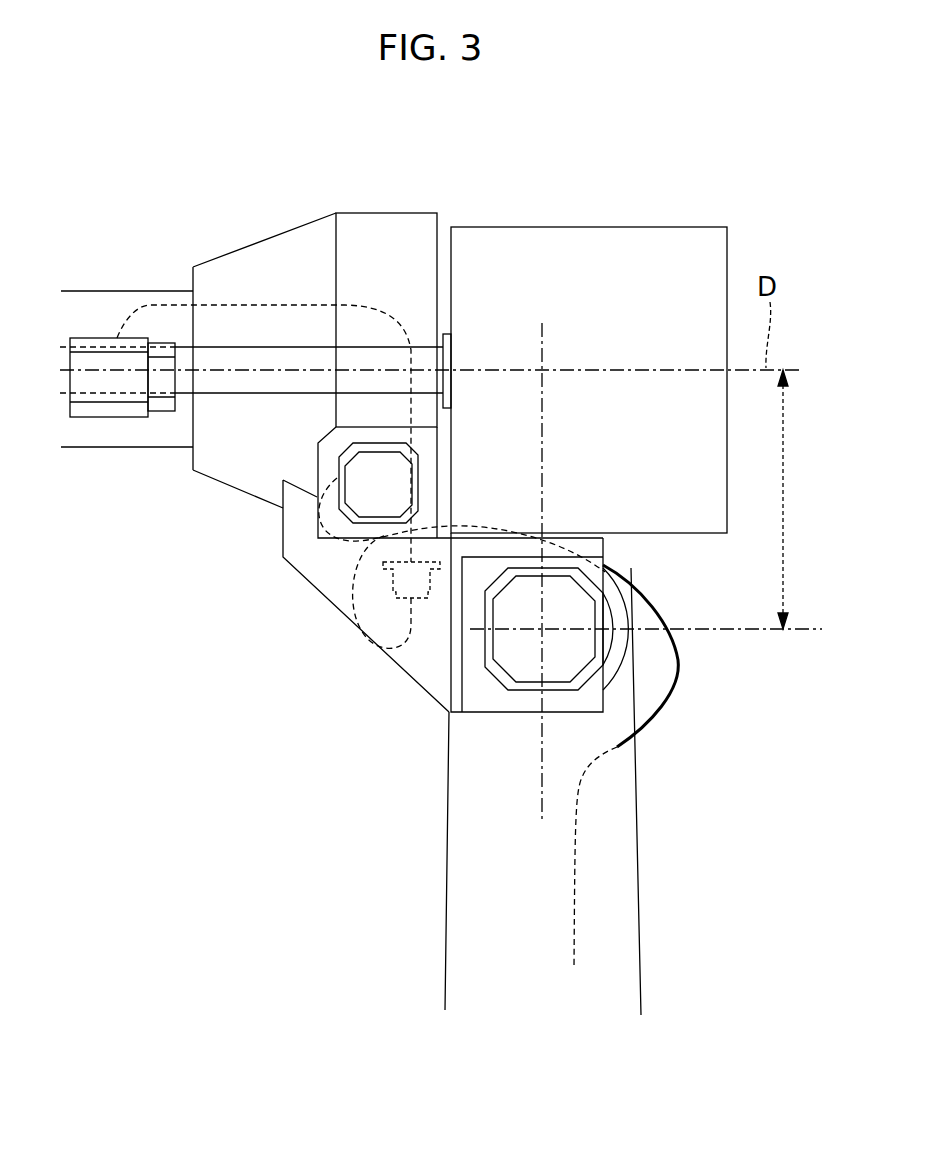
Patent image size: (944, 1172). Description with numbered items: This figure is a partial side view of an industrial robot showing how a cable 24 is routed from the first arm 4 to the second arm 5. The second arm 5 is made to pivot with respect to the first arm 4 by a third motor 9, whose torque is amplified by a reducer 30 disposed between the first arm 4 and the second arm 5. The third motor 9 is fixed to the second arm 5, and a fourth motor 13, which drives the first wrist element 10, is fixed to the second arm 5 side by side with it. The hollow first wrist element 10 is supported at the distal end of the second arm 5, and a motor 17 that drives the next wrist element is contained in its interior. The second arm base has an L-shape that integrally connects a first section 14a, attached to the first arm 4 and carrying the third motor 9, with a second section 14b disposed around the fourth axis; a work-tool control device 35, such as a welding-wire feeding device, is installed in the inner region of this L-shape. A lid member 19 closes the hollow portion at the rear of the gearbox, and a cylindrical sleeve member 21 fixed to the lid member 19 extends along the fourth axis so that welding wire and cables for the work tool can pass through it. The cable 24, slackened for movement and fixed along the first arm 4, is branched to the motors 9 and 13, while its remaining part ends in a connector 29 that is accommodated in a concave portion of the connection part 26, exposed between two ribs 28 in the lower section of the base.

The first arm 4 is at (653, 893).
The second arm 5 is at (382, 208).
The third motor 9 is at (500, 680).
The first wrist element 10 is at (110, 291).
The fourth motor 13 is at (418, 482).
The first section 14a is at (475, 713).
The second section 14b is at (282, 233).
The motor 17 is at (108, 418).
The lid member 19 is at (437, 277).
The cylindrical sleeve member 21 is at (451, 353).
The cable 24 is at (673, 695).
The connection part 26 is at (331, 600).
The ribs 28 is at (405, 656).
The connector 29 is at (440, 590).
The reducer 30 is at (620, 668).
The work-tool control device 35 is at (649, 227).